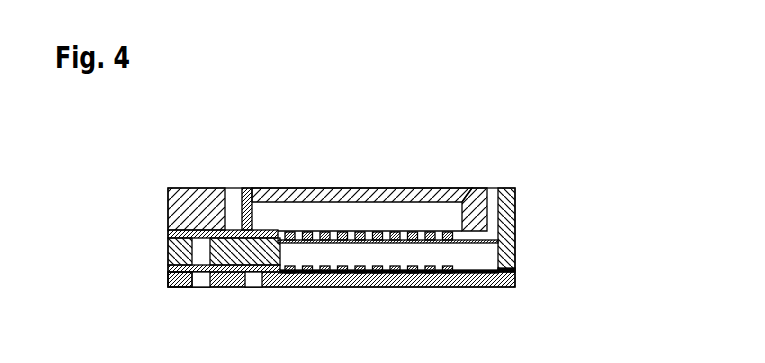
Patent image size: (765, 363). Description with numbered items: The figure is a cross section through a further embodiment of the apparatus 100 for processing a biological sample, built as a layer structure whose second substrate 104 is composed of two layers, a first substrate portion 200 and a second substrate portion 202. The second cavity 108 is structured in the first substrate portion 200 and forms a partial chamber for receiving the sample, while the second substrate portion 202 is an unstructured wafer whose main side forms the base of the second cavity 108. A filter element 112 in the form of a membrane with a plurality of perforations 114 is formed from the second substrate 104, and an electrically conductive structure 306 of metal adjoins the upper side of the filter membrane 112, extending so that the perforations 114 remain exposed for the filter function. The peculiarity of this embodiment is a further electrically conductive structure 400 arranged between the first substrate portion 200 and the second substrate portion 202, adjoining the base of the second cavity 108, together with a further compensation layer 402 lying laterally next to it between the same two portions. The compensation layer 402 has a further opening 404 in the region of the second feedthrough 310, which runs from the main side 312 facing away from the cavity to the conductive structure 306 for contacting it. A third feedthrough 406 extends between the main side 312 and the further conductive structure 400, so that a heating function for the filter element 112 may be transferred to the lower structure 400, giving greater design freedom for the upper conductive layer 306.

The apparatus 100 is at (170, 170).
The second substrate 104 is at (545, 263).
The second cavity 108 is at (480, 255).
The filter element 112 is at (430, 243).
The perforations 114 is at (383, 242).
The first substrate portion 200 is at (168, 246).
The second substrate portion 202 is at (168, 270).
The electrically conductive structure 306 is at (323, 230).
The second feedthrough 310 is at (204, 262).
The main side 312 is at (297, 286).
The further electrically conductive structure 400 is at (342, 284).
The further compensation layer 402 is at (516, 275).
The further opening 404 is at (188, 287).
The third feedthrough 406 is at (250, 286).